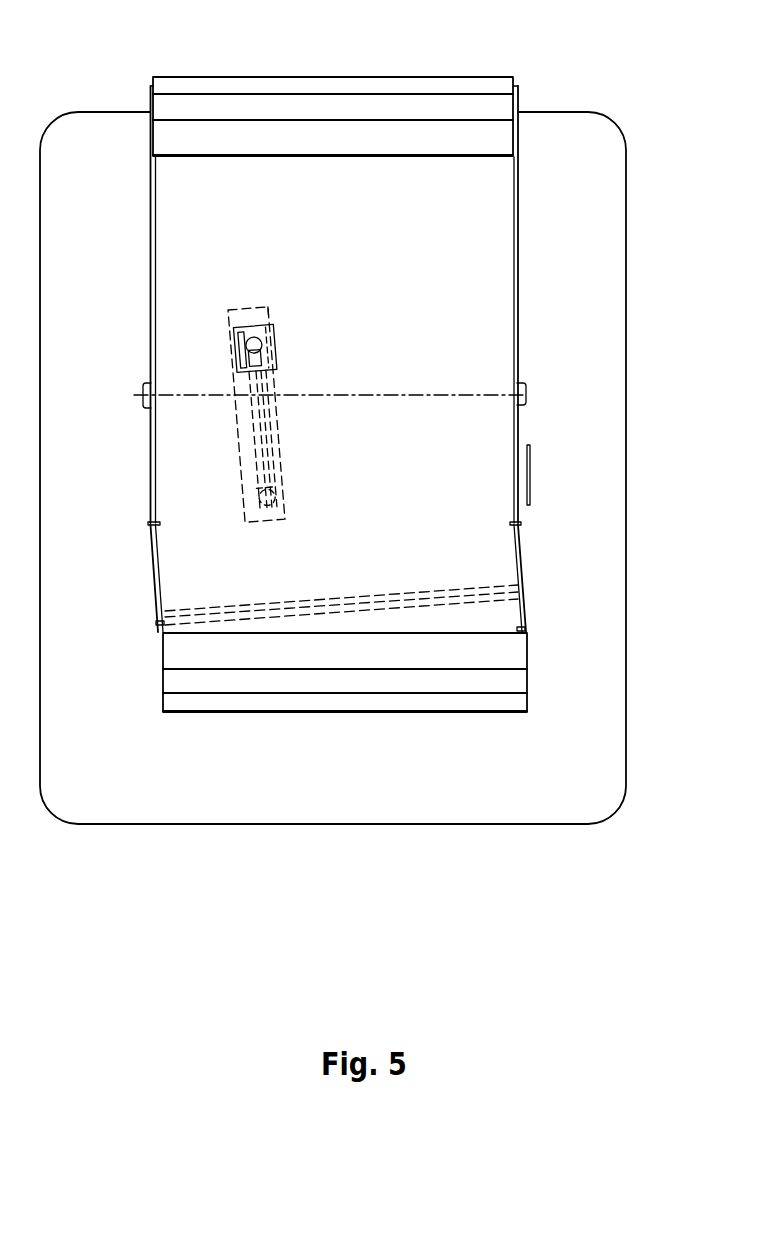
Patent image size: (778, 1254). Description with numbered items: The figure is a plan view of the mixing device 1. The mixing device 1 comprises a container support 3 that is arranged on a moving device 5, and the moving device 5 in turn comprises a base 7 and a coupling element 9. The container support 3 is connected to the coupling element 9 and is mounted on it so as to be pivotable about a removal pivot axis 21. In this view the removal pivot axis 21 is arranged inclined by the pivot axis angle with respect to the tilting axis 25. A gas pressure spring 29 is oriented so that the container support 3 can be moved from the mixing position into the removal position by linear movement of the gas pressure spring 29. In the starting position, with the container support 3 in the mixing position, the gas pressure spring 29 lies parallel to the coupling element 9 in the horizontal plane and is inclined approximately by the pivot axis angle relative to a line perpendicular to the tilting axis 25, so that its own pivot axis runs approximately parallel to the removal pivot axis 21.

The mixing device 1 is at (645, 42).
The container support 3 is at (198, 102).
The moving device 5 is at (658, 273).
The base 7 is at (606, 188).
The coupling element 9 is at (522, 285).
The removal pivot axis 21 is at (457, 588).
The tilting axis 25 is at (457, 392).
The gas pressure spring 29 is at (264, 451).